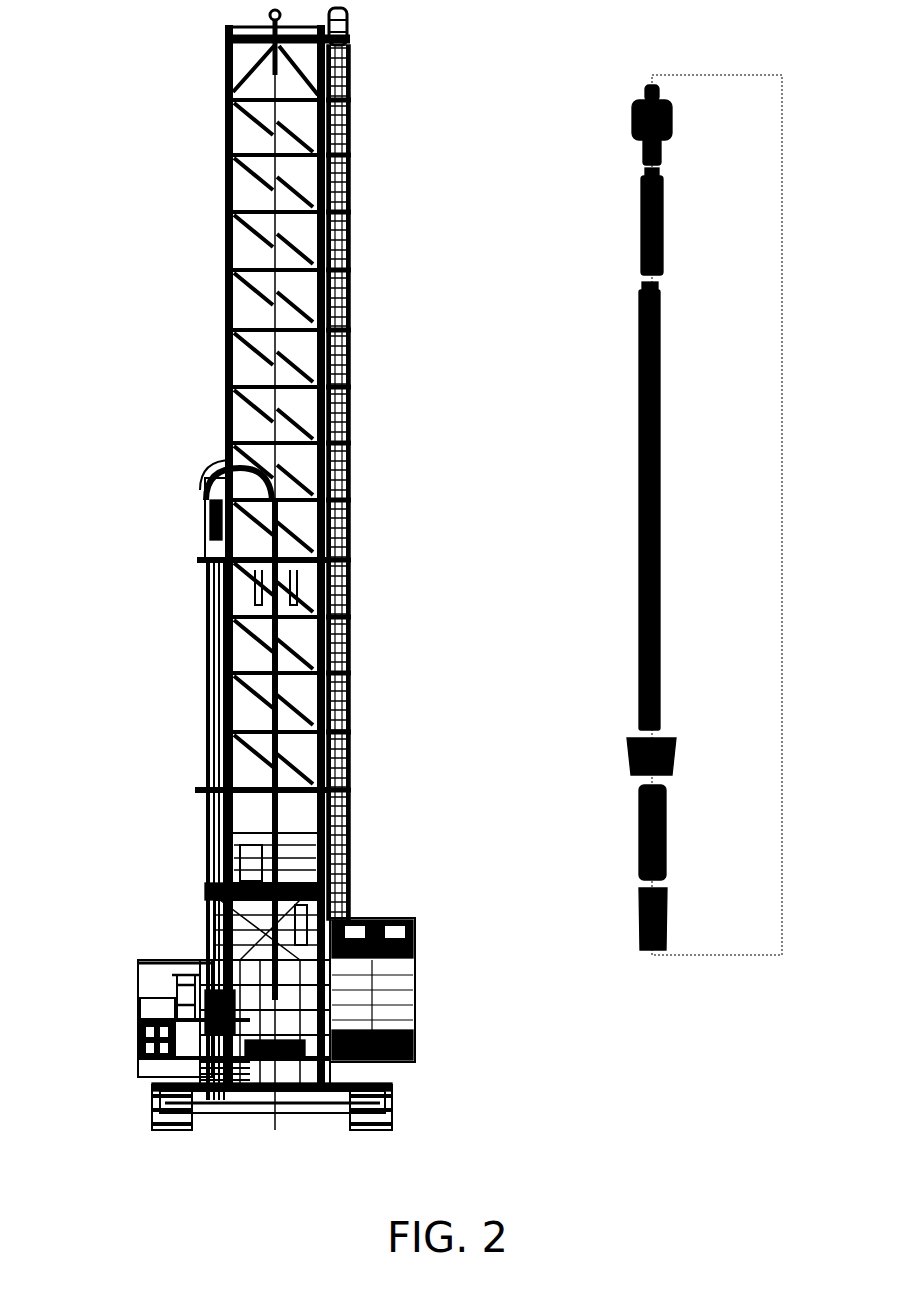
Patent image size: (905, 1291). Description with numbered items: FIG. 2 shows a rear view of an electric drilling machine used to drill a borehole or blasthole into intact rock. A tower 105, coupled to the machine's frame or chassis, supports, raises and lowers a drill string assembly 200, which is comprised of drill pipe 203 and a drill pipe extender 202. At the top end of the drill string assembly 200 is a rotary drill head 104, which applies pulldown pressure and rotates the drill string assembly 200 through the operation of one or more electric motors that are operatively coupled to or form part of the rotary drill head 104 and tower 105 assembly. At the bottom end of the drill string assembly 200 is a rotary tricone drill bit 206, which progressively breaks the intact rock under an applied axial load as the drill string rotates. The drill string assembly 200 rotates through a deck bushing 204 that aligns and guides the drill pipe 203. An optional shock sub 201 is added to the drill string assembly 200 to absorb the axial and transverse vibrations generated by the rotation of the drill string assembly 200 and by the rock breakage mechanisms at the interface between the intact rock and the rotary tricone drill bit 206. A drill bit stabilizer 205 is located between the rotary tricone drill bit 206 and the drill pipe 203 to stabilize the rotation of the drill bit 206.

The rotary drill head 104 is at (205, 900).
The tower 105 is at (200, 225).
The drill string assembly 200 is at (300, 1100).
The shock sub 201 is at (688, 125).
The drill pipe extender 202 is at (693, 221).
The drill pipe 203 is at (701, 506).
The deck bushing 204 is at (689, 760).
The drill bit stabilizer 205 is at (691, 832).
The rotary tricone drill bit 206 is at (696, 919).